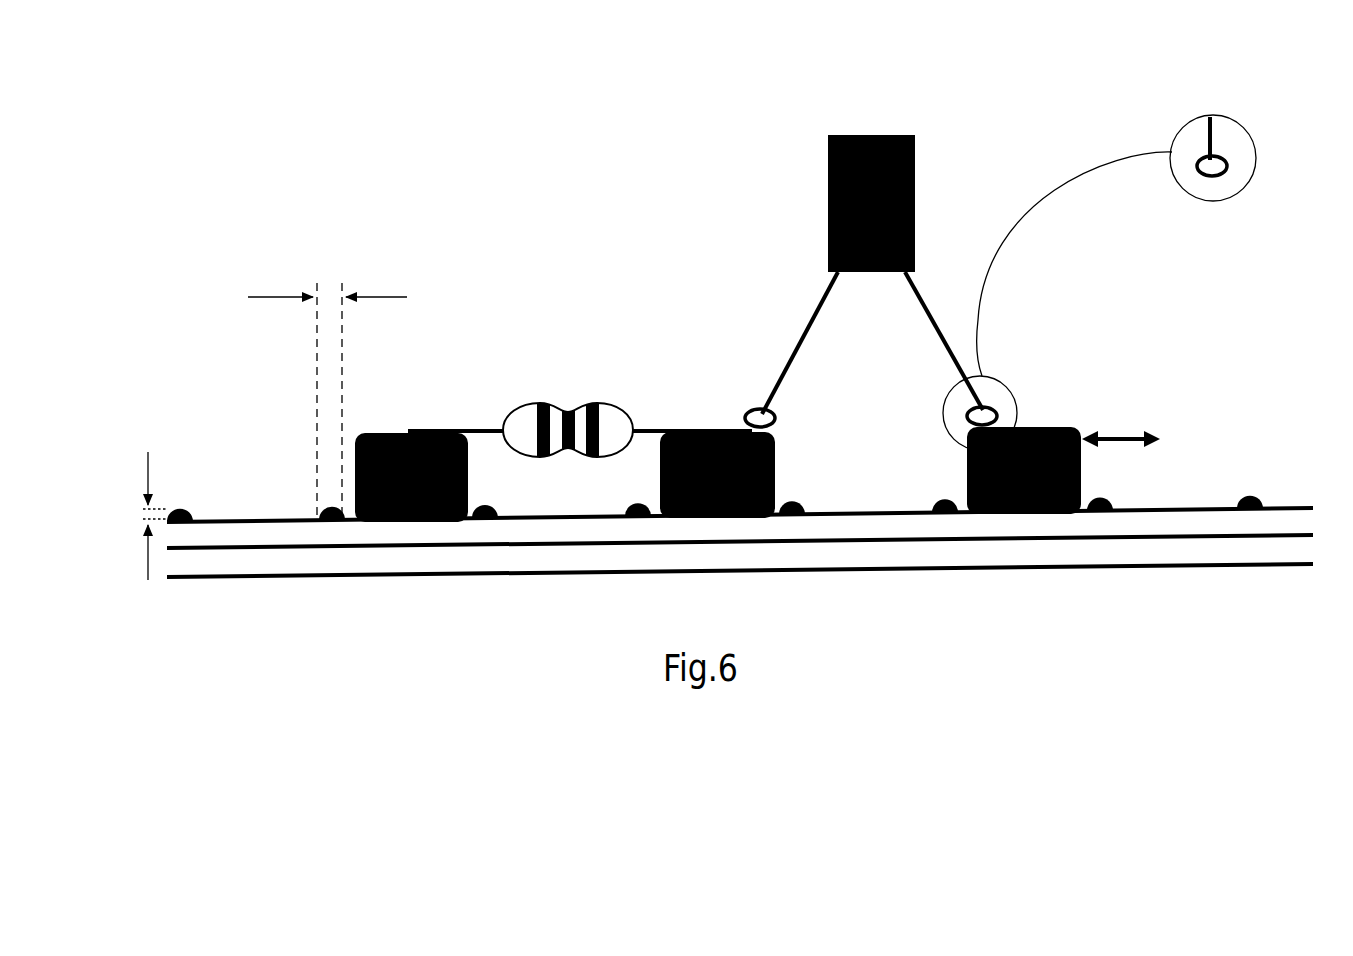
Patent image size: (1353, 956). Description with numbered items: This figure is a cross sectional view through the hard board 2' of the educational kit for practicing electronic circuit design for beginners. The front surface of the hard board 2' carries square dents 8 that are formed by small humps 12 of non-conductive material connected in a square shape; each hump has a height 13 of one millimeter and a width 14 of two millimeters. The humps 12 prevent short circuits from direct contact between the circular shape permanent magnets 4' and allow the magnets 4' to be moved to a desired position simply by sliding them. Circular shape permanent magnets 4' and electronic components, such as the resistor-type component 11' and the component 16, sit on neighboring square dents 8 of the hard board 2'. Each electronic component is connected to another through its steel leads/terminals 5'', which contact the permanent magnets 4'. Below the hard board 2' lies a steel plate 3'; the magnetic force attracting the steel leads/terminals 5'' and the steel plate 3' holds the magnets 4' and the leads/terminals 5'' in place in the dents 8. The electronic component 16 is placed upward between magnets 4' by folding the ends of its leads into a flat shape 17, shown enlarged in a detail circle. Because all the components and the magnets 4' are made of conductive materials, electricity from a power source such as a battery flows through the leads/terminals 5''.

The hard board 2' is at (754, 472).
The steel plate 3' is at (749, 610).
The circular shape permanent magnet 4' is at (757, 414).
The steel leads/terminals 5'' is at (580, 370).
The square dent 8 is at (870, 512).
The resistor component 11' is at (568, 371).
The small hump 12 is at (183, 512).
The height of hump 13 is at (144, 512).
The width of hump 14 is at (330, 297).
The electronic component 16 is at (870, 133).
The folded flat lead end 17 is at (999, 407).